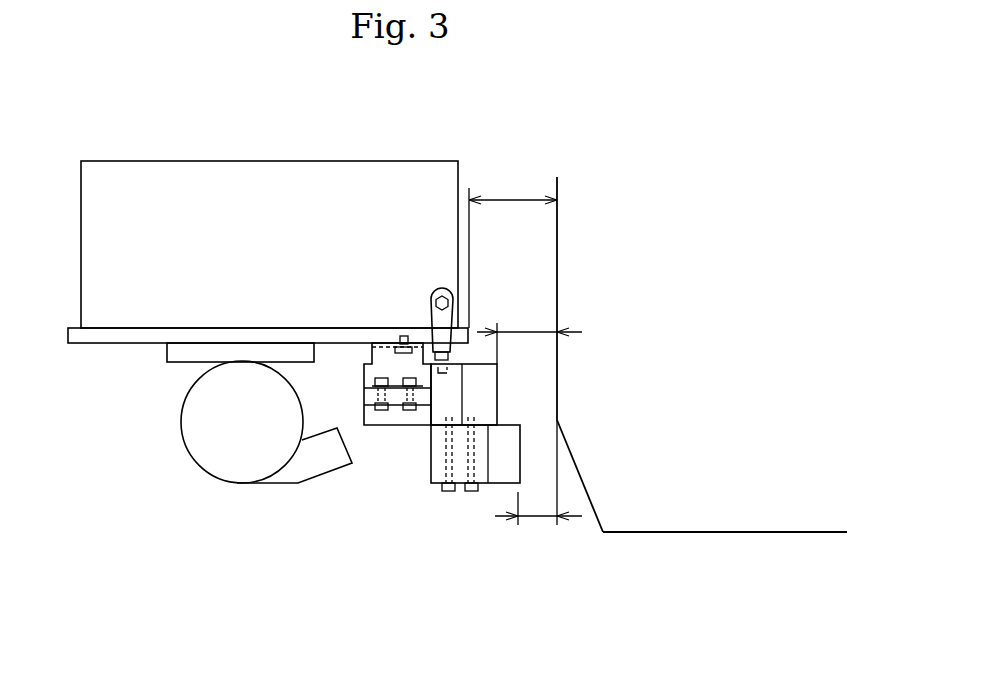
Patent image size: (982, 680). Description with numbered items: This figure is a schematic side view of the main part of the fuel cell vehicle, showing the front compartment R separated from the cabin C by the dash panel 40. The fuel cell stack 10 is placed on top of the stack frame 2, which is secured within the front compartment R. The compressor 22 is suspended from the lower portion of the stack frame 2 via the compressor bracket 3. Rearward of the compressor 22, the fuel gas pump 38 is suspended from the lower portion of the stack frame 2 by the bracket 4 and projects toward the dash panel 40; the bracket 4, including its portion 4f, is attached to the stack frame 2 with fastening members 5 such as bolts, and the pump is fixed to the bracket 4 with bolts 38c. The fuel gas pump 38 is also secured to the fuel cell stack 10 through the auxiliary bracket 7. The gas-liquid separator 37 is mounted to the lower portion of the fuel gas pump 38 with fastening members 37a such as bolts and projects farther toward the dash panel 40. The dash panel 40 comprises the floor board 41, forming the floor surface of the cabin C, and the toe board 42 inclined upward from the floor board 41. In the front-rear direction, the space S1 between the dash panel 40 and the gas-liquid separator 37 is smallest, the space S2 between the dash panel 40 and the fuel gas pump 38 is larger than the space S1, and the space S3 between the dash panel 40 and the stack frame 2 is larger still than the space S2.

The stack frame 2 is at (123, 337).
The compressor bracket 3 is at (197, 347).
The bracket 4 is at (380, 363).
The flange portion of bracket 4f is at (400, 340).
The fastening member 5 is at (402, 333).
The auxiliary bracket 7 is at (433, 288).
The fuel cell stack 10 is at (341, 157).
The compressor 22 is at (198, 448).
The gas-liquid separator 37 is at (432, 448).
The fastening member 37a is at (470, 492).
The fuel gas pump 38 is at (483, 388).
The bolt 38c is at (402, 408).
The dash panel 40 is at (561, 264).
The floor board 41 is at (590, 497).
The toe board 42 is at (707, 532).
The front compartment R is at (188, 134).
The cabin C is at (771, 308).
The space S1 is at (537, 517).
The space S2 is at (529, 336).
The space S3 is at (513, 250).